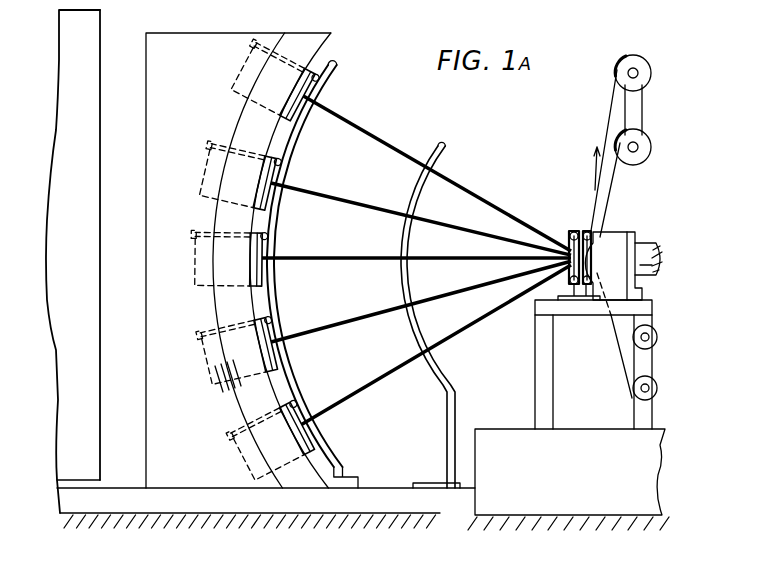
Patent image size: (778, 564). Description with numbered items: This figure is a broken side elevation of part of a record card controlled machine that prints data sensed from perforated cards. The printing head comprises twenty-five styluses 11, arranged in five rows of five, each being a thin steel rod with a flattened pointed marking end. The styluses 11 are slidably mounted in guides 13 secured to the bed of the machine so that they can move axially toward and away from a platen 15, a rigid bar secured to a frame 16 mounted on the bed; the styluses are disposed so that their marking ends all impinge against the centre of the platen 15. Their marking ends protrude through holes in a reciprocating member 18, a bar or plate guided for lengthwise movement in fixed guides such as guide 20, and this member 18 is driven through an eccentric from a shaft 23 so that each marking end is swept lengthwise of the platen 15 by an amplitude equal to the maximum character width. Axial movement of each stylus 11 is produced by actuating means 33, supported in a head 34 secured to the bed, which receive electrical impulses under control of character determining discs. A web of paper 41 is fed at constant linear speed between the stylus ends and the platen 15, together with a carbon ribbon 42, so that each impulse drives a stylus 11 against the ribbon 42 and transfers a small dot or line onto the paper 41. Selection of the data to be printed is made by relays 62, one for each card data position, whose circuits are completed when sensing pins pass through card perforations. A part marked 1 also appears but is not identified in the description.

The ground / base 1 is at (410, 518).
The stylus 11 is at (365, 132).
The guides 13 is at (440, 147).
The platen 15 is at (608, 250).
The frame 16 is at (545, 397).
The reciprocating member 18 is at (573, 231).
The fixed guide 20 is at (587, 231).
The shaft 23 is at (655, 258).
The actuating means 33 is at (213, 138).
The head 34 is at (168, 60).
The web of paper 41 is at (610, 184).
The carbon ribbon 42 is at (612, 108).
The relays 62 is at (82, 48).